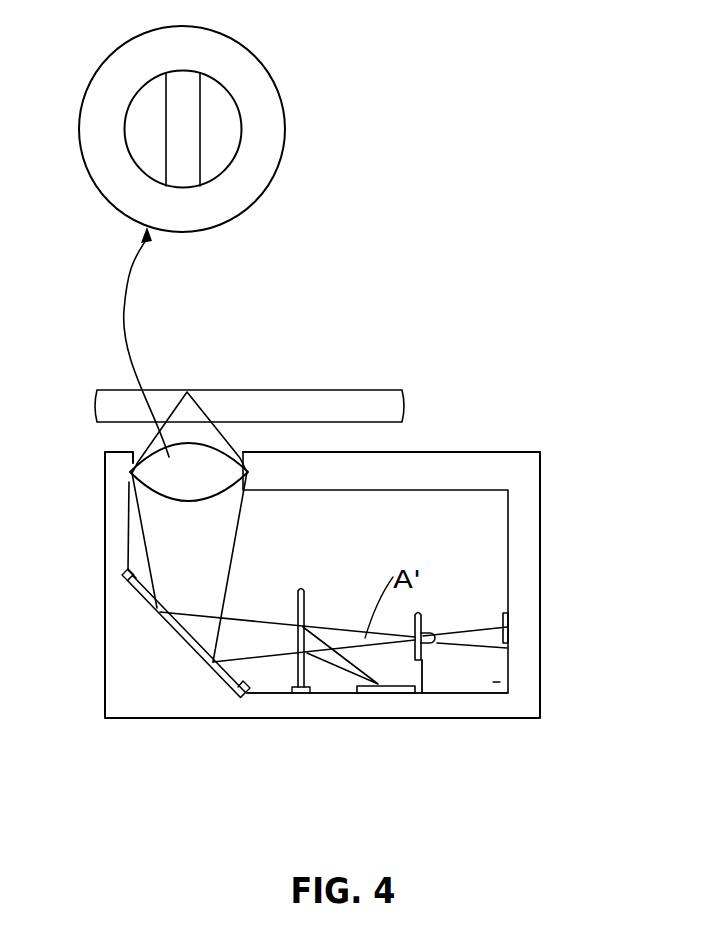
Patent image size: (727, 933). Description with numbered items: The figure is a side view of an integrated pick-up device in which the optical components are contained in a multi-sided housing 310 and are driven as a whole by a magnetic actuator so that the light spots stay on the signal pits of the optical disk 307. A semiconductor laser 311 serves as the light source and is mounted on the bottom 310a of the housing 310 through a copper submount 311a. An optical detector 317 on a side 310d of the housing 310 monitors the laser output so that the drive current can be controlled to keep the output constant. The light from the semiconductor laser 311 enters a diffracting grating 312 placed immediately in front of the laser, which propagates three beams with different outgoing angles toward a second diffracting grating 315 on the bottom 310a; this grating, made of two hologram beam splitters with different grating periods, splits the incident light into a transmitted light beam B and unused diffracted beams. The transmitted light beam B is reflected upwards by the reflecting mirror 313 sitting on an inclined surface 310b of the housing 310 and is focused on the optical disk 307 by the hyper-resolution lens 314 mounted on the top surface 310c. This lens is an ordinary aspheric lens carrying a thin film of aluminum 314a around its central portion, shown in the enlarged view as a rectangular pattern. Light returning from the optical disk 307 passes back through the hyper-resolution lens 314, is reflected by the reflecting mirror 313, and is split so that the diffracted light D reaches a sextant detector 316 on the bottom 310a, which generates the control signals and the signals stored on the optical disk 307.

The optical disk 307 is at (350, 400).
The housing 310 is at (493, 470).
The bottom of the housing 310a is at (490, 700).
The inclined surface of the housing 310b is at (157, 610).
The top surface of the housing 310c is at (295, 490).
The side of the housing 310d is at (508, 523).
The semiconductor laser 311 is at (433, 625).
The submount 311a is at (493, 682).
The diffracting grating 312 is at (423, 658).
The reflecting mirror 313 is at (185, 645).
The hyper-resolution lens 314 is at (150, 162).
The thin film of aluminum 314a is at (190, 168).
The diffracting grating 315 is at (293, 672).
The sextant detector 316 is at (398, 690).
The optical detector 317 is at (508, 628).
The transmitted light beam B is at (235, 630).
The diffracted light D is at (342, 663).